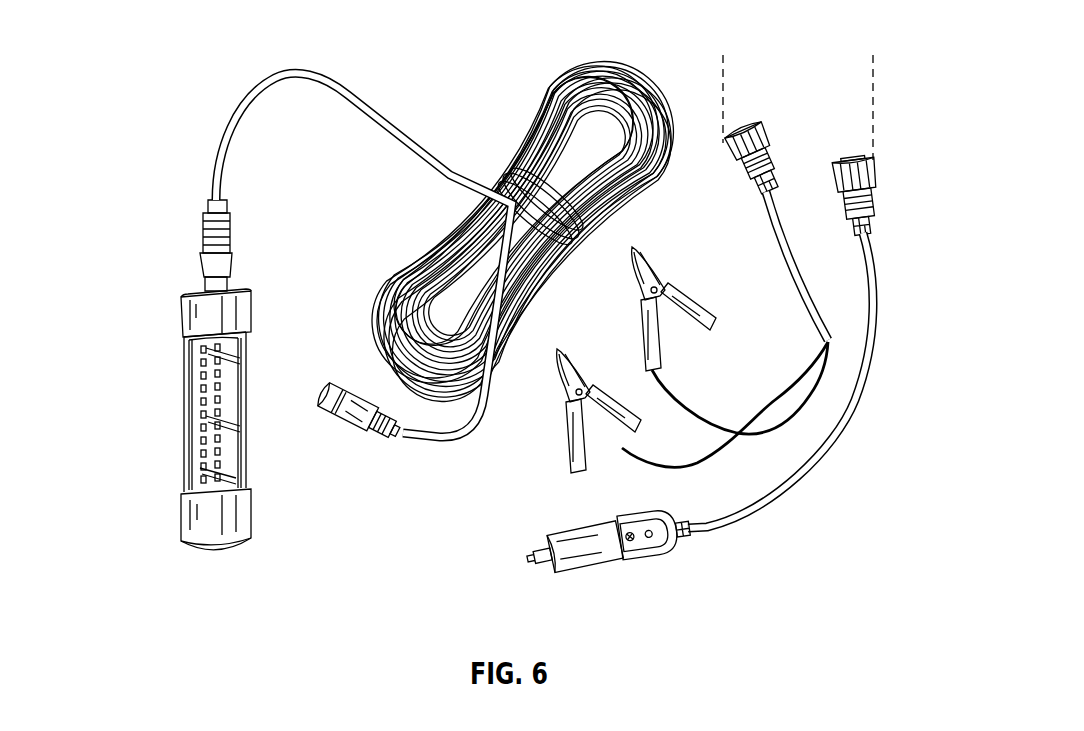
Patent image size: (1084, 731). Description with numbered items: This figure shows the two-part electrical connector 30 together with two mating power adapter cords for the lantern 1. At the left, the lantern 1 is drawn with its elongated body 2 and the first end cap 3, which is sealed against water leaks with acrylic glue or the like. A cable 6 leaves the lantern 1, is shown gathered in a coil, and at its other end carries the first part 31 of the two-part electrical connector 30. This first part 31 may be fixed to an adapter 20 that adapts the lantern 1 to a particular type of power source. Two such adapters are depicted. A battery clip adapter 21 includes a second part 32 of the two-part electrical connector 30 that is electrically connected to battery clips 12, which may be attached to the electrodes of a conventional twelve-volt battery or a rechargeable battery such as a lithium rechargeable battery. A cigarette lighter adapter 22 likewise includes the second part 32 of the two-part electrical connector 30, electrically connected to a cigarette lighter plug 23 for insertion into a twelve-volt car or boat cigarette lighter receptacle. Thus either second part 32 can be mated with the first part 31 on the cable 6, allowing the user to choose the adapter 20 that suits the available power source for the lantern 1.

The lantern 1 is at (140, 368).
The elongated body 2 is at (188, 392).
The first end cap 3 is at (250, 298).
The cable 6 is at (350, 92).
The battery clips 12 is at (640, 252).
The adapter 20 is at (873, 55).
The battery clip adapter 21 is at (790, 262).
The cigarette lighter adapter 22 is at (855, 430).
The cigarette lighter plug 23 is at (652, 555).
The two-part electrical connector 30 is at (324, 418).
The first part 31 is at (330, 382).
The second part 32 is at (740, 128).